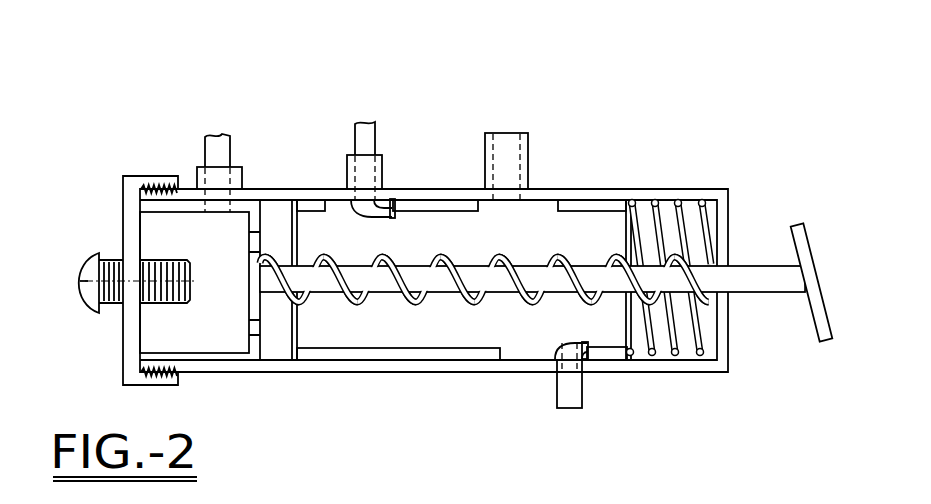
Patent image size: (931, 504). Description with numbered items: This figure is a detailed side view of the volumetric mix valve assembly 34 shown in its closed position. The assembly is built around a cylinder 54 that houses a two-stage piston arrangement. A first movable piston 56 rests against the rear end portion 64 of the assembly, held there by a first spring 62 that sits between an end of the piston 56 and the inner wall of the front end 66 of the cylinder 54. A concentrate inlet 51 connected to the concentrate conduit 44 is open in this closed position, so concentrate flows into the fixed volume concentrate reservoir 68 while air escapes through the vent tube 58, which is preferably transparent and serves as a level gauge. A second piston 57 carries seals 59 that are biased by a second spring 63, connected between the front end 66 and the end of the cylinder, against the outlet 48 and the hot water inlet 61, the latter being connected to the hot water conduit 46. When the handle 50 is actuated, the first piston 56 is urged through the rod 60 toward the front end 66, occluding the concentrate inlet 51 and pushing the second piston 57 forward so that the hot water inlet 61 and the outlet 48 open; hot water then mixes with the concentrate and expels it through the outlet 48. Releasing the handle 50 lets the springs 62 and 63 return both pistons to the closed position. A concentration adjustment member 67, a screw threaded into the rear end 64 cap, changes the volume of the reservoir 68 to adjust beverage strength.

The volumetric mix valve assembly 34 is at (427, 100).
The concentrate conduit 44 is at (207, 143).
The hot water conduit 46 is at (355, 135).
The outlet 48 is at (557, 408).
The handle 50 is at (815, 279).
The concentrate inlet 51 is at (200, 172).
The cylinder 54 is at (612, 188).
The first movable piston 56 is at (163, 207).
The second piston 57 is at (302, 200).
The vent tube 58 is at (530, 143).
The seals 59 is at (392, 216).
The rod 60 is at (762, 291).
The hot water inlet 61 is at (384, 155).
The first spring 62 is at (505, 262).
The second spring 63 is at (683, 200).
The rear end portion 64 is at (123, 204).
The front end 66 is at (729, 210).
The concentration adjustment member 67 is at (88, 308).
The fixed volume concentrate reservoir 68 is at (155, 330).